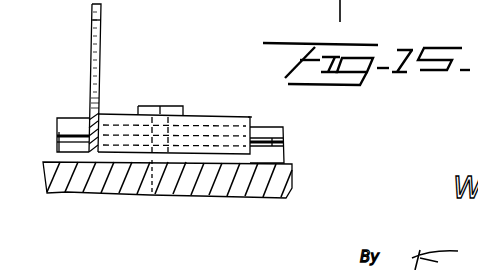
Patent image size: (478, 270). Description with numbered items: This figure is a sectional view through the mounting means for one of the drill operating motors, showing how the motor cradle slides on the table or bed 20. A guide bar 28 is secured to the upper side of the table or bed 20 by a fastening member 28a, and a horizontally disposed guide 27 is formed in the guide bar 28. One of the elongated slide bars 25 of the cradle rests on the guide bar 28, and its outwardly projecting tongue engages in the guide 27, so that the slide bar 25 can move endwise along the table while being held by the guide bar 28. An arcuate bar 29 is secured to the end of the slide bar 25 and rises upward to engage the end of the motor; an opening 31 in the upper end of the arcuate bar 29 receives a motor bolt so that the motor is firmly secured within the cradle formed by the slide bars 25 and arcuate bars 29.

The table or bed 20 is at (117, 185).
The elongated bar 25 is at (228, 118).
The guide 27 is at (273, 138).
The guide bar 28 is at (71, 116).
The fastening member 28a is at (173, 107).
The arcuate bar 29 is at (98, 48).
The opening 31 is at (103, 27).